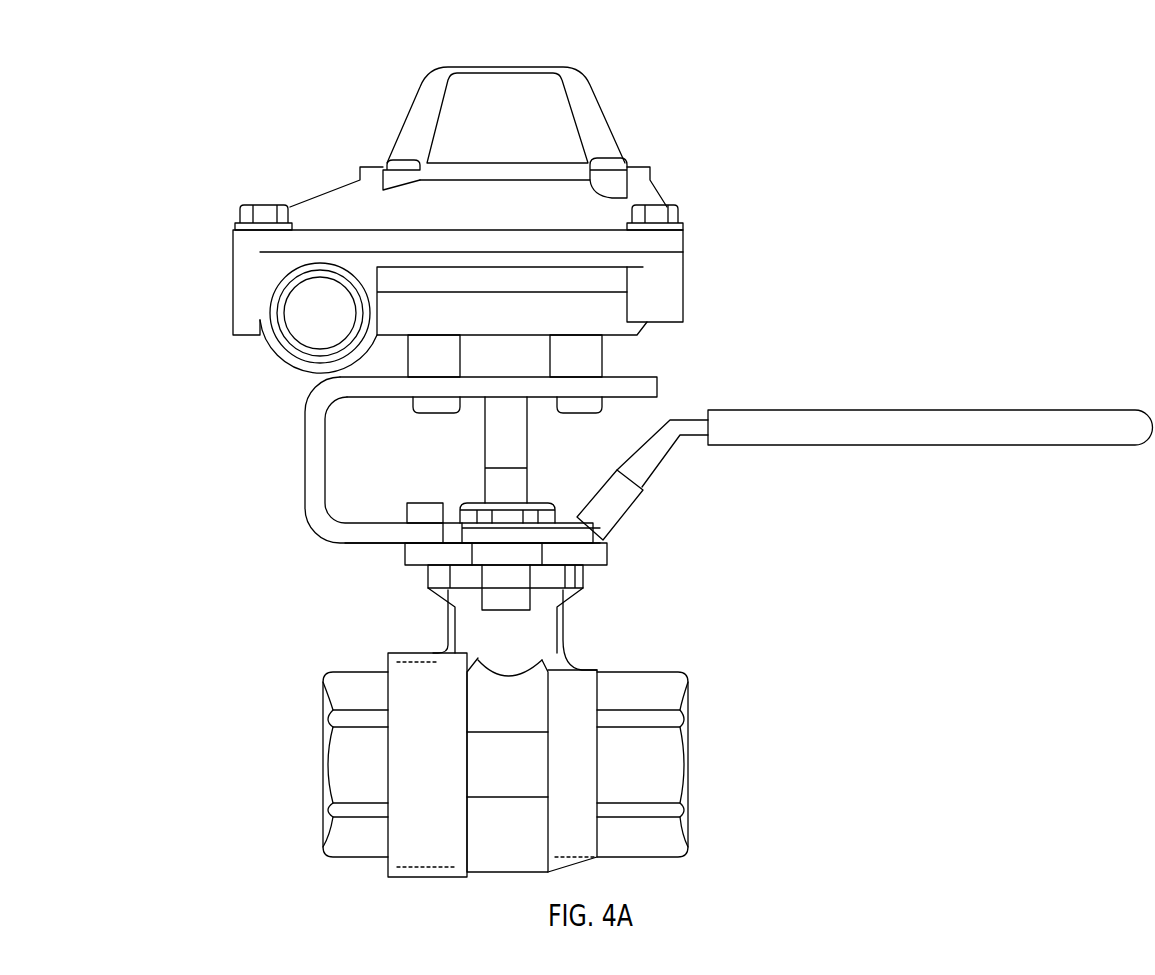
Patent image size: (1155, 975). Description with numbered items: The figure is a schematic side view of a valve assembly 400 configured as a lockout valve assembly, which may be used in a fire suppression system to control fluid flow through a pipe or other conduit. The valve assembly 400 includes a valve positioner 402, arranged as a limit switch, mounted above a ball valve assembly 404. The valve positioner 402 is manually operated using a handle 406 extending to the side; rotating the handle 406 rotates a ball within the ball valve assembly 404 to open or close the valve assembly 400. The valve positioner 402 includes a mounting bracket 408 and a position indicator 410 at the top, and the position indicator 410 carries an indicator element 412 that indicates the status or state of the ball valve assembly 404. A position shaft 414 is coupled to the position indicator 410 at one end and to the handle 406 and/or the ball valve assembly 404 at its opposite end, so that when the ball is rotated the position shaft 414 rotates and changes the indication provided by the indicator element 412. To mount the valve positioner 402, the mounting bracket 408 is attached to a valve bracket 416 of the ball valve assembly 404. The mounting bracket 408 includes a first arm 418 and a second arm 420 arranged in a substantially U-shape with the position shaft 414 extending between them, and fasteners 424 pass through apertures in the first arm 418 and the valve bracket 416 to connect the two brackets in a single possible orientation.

The valve assembly 400 is at (884, 193).
The valve positioner 402 is at (247, 92).
The ball valve assembly 404 is at (247, 545).
The handle 406 is at (1038, 415).
The mounting bracket 408 is at (315, 468).
The position indicator 410 is at (598, 117).
The indicator element 412 is at (522, 93).
The position shaft 414 is at (513, 452).
The valve bracket 416 is at (603, 553).
The first arm 418 is at (388, 535).
The second arm 420 is at (647, 387).
The fasteners 424 is at (425, 508).